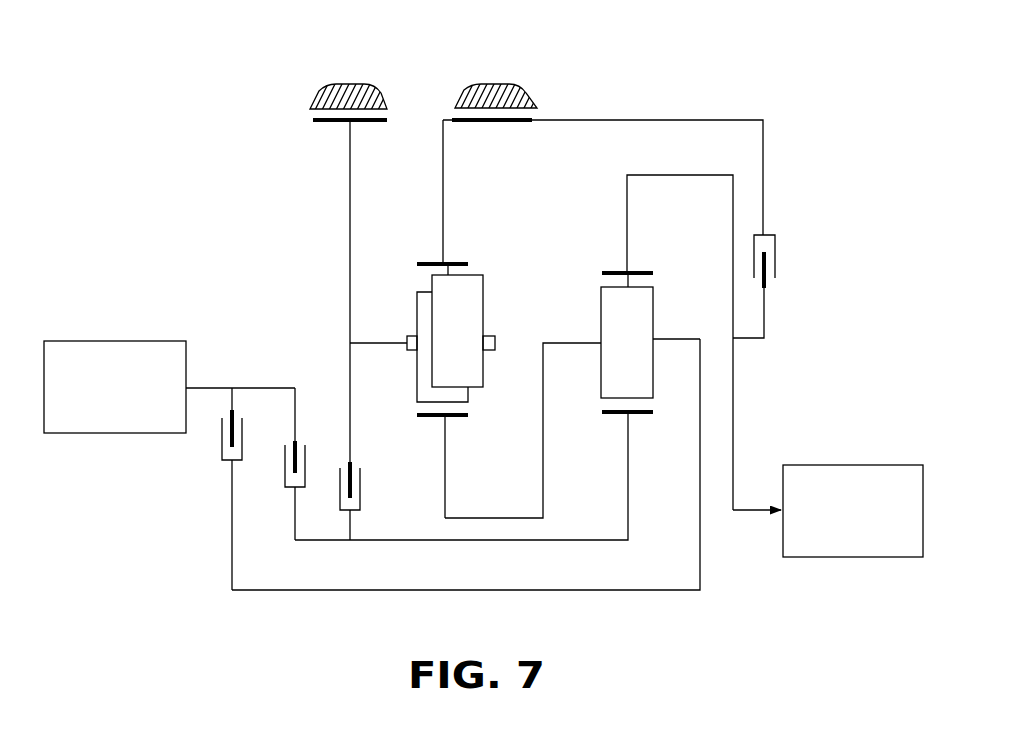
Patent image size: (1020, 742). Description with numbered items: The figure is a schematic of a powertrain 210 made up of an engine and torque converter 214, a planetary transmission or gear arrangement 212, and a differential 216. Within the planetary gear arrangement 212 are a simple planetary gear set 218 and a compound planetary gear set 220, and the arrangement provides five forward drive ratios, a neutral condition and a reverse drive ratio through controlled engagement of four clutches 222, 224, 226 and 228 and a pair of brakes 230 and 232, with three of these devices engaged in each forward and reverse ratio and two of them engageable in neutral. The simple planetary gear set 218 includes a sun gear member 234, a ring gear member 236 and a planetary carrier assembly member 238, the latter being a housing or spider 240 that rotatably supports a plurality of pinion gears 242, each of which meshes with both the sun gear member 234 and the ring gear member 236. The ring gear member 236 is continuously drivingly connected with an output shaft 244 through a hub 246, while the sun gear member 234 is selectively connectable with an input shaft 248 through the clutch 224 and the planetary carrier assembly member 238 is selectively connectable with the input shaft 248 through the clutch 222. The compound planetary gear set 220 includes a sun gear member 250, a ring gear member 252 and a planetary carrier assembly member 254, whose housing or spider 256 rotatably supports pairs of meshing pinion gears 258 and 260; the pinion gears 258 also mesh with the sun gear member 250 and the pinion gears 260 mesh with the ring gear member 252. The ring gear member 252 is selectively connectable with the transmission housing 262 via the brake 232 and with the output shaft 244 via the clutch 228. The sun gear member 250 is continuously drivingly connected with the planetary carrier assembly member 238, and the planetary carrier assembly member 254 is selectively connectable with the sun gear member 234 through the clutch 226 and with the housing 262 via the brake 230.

The powertrain 210 is at (264, 217).
The planetary transmission or gear arrangement 212 is at (553, 249).
The engine and torque converter 214 is at (68, 437).
The differential 216 is at (901, 461).
The simple planetary gear set 218 is at (667, 394).
The compound planetary gear set 220 is at (410, 298).
The clutch 222 is at (220, 435).
The clutch 224 is at (285, 460).
The clutch 226 is at (361, 483).
The clutch 228 is at (777, 260).
The brake 230 is at (306, 92).
The brake 232 is at (544, 92).
The sun gear member 234 is at (633, 413).
The ring gear member 236 is at (637, 270).
The planetary carrier assembly member 238 is at (665, 326).
The housing or spider 240 is at (677, 339).
The pinion gears 242 is at (607, 338).
The output shaft 244 is at (745, 514).
The hub 246 is at (733, 307).
The input shaft 248 is at (224, 385).
The sun gear member 250 is at (445, 437).
The ring gear member 252 is at (452, 262).
The planetary carrier assembly member 254 is at (487, 297).
The housing or spider 256 is at (385, 342).
The pinion gears 258 is at (460, 395).
The pinion gears 260 is at (442, 285).
The transmission housing 262 is at (342, 83).